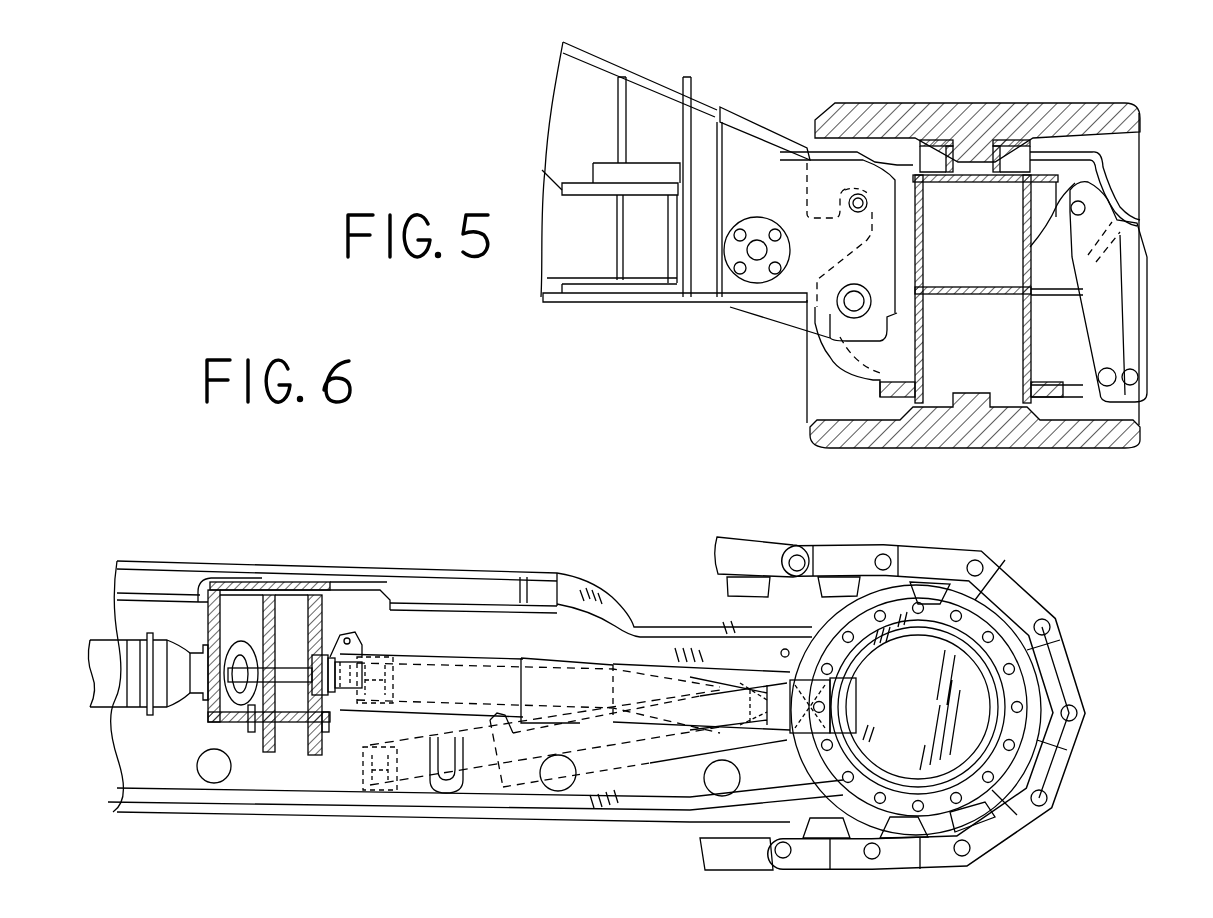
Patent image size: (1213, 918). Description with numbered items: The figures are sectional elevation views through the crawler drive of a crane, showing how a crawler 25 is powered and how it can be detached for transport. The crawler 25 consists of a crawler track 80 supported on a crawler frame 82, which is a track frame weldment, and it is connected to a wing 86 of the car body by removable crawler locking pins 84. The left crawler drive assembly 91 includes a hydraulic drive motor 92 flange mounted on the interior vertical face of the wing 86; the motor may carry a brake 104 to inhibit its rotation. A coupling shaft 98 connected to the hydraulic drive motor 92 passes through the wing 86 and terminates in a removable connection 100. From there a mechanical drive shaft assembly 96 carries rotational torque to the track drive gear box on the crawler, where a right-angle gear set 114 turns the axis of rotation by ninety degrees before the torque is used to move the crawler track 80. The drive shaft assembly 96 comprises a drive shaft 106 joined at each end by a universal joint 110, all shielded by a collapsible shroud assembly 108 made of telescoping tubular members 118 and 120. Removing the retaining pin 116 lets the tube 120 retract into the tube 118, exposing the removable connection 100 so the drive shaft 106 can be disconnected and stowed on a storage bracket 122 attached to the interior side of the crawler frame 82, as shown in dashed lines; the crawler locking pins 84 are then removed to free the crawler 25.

In FIG. 5, the crawler 25 is at (1143, 123).
In FIG. 6, the crawler 25 is at (1010, 840).
In FIG. 5, the crawler track 80 is at (1057, 103).
In FIG. 6, the crawler track 80 is at (1018, 593).
In FIG. 5, the crawler frame 82 is at (1143, 173).
In FIG. 6, the crawler frame 82 is at (138, 737).
In FIG. 5, the crawler locking pin 84 is at (817, 317).
In FIG. 5, the wing 86 is at (650, 82).
In FIG. 6, the left crawler drive assembly 91 is at (593, 800).
In FIG. 6, the hydraulic drive motor 92 is at (110, 663).
In FIG. 6, the mechanical drive shaft assembly 96 is at (582, 660).
In FIG. 5, the coupling shaft 98 is at (757, 262).
In FIG. 6, the coupling shaft 98 is at (272, 675).
In FIG. 6, the removable connection 100 is at (343, 688).
In FIG. 6, the brake 104 is at (165, 657).
In FIG. 6, the drive shaft 106 is at (457, 683).
In FIG. 6, the collapsible shroud assembly 108 is at (543, 660).
In FIG. 6, the universal joint 110 is at (373, 712).
In FIG. 6, the right-angle gear set 114 is at (977, 717).
In FIG. 6, the retaining pin 116 is at (343, 632).
In FIG. 6, the tubular member 118 is at (700, 657).
In FIG. 6, the tube 120 is at (487, 657).
In FIG. 6, the storage bracket 122 is at (460, 780).